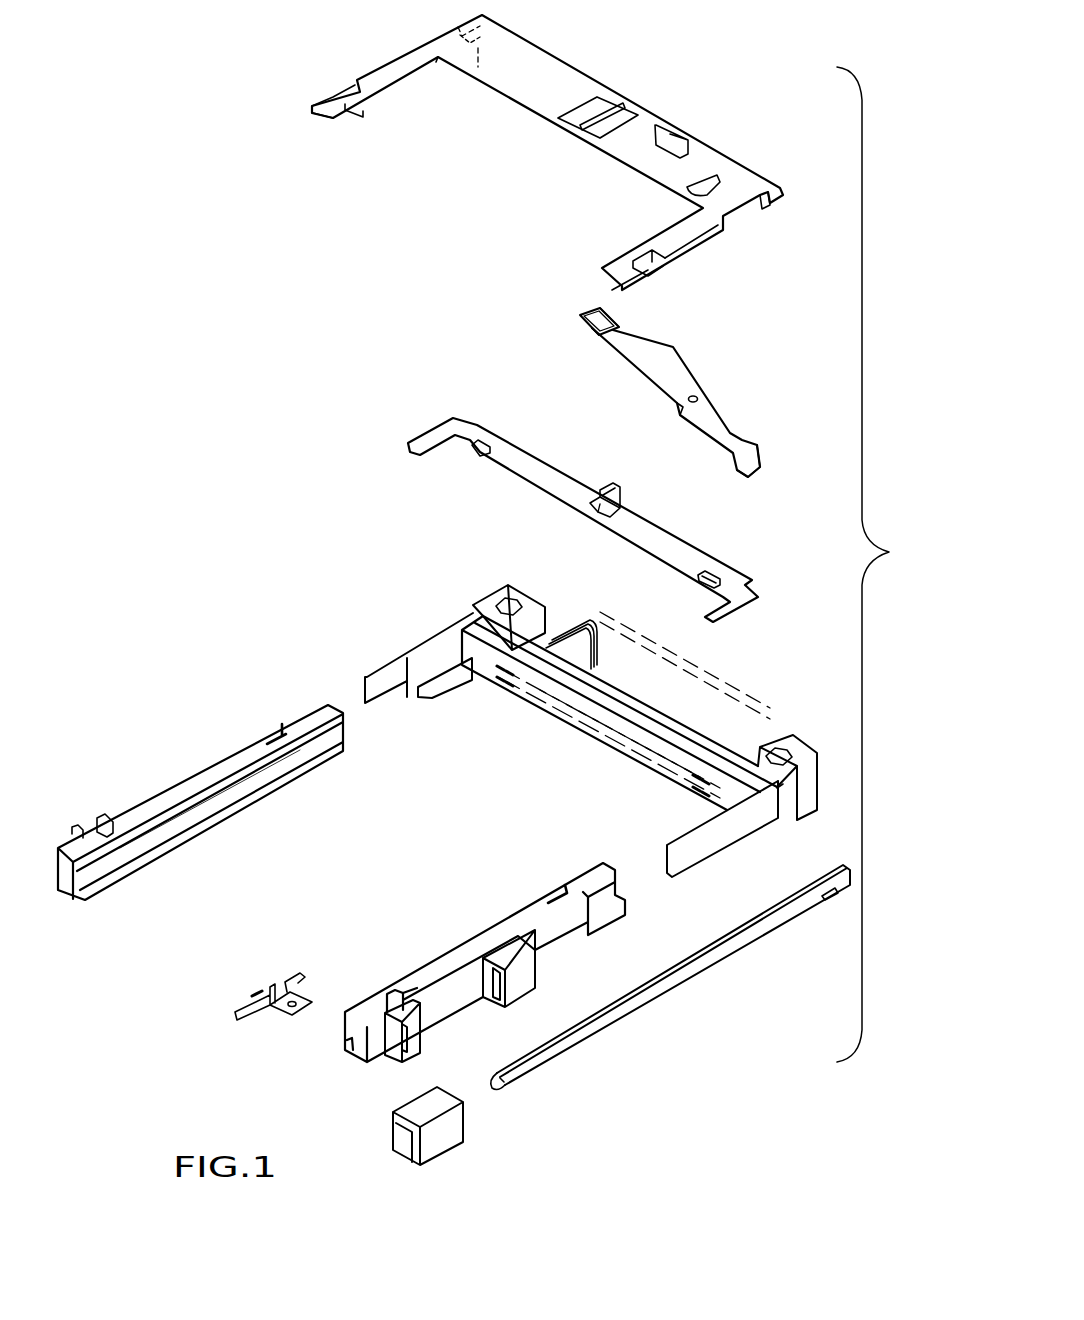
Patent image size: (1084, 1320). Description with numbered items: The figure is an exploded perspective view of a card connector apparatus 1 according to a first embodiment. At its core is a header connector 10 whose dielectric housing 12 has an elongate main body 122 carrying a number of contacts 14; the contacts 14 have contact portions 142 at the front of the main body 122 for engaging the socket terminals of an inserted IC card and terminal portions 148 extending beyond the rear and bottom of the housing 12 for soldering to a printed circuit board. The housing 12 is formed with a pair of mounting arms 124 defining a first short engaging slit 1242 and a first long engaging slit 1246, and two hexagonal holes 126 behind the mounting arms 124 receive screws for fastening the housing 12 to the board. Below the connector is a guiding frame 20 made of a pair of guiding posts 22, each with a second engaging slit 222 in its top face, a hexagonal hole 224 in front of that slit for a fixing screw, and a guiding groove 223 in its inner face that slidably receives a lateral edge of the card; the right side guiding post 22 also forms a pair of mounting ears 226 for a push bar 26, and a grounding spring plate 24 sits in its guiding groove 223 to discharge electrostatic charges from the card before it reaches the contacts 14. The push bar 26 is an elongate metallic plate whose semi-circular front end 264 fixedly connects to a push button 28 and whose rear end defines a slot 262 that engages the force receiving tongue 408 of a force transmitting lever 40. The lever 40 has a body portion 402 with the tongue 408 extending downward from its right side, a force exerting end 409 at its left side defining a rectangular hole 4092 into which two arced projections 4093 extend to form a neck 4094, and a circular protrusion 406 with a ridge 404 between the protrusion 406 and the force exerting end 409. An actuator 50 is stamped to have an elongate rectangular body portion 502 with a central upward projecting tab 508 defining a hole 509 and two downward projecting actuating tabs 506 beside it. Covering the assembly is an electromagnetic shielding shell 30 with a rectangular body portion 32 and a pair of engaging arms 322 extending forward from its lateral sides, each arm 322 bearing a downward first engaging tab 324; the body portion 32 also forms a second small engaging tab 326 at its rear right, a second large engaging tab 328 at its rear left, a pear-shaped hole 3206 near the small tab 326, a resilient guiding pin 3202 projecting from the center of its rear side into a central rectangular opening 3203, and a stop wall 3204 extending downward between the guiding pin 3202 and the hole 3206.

The card connector apparatus 1 is at (163, 118).
The header connector 10 is at (736, 678).
The dielectric housing 12 is at (805, 770).
The elongate main body 122 is at (580, 724).
The mounting arms 124 is at (699, 855).
The first short engaging slit 1242 is at (771, 800).
The first long engaging slit 1246 is at (466, 612).
The hexagonal holes 126 is at (509, 601).
The contacts 14 is at (583, 605).
The contact portions 142 is at (693, 793).
The terminal portions 148 is at (602, 646).
The guiding frame 20 is at (180, 684).
The guiding posts 22 is at (223, 766).
The second engaging slit 222 is at (274, 733).
The guiding groove 223 is at (181, 821).
The hexagonal hole 224 is at (108, 815).
The mounting ears 226 is at (518, 981).
The grounding spring plate 24 is at (255, 1020).
The push bar 26 is at (669, 984).
The slot 262 is at (833, 896).
The front end 264 is at (500, 1086).
The push button 28 is at (456, 1124).
The electromagnetic shielding shell 30 is at (674, 32).
The rectangular body portion 32 is at (563, 75).
The guiding pin 3202 is at (608, 106).
The central rectangular opening 3203 is at (592, 133).
The stop wall 3204 is at (684, 112).
The pear-shaped hole 3206 is at (714, 174).
The engaging arms 322 is at (378, 70).
The first engaging tab 324 is at (357, 115).
The second small engaging tab 326 is at (763, 206).
The second large engaging tab 328 is at (468, 85).
The force transmitting lever 40 is at (758, 351).
The body portion 402 is at (683, 412).
The ridge 404 is at (678, 347).
The circular protrusion 406 is at (700, 400).
The force receiving tongue 408 is at (752, 463).
The force exerting end 409 is at (597, 327).
The rectangular hole 4092 is at (598, 318).
The arced projections 4093 is at (608, 322).
The neck 4094 is at (599, 337).
The actuator 50 is at (754, 508).
The body portion 502 is at (560, 482).
The actuating tabs 506 is at (481, 442).
The central upward projecting tab 508 is at (607, 495).
The hole 509 is at (598, 519).